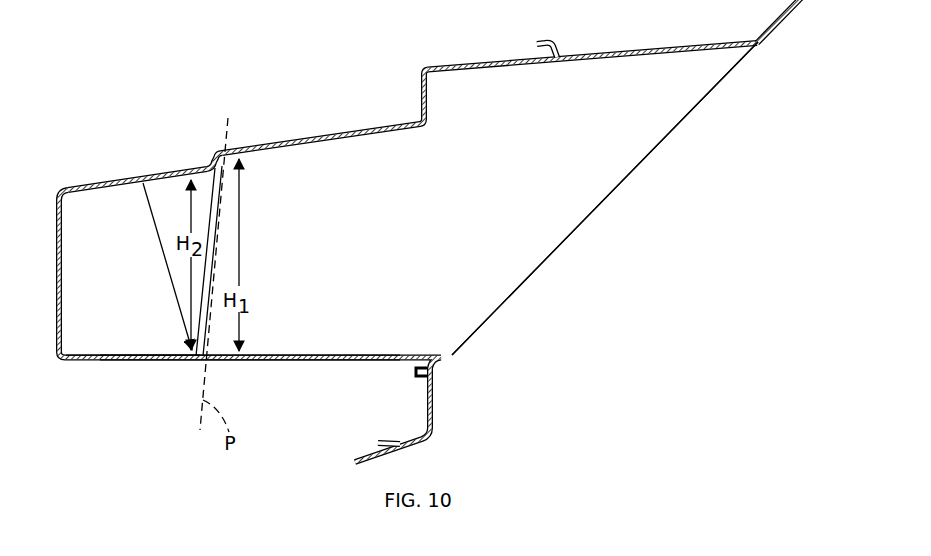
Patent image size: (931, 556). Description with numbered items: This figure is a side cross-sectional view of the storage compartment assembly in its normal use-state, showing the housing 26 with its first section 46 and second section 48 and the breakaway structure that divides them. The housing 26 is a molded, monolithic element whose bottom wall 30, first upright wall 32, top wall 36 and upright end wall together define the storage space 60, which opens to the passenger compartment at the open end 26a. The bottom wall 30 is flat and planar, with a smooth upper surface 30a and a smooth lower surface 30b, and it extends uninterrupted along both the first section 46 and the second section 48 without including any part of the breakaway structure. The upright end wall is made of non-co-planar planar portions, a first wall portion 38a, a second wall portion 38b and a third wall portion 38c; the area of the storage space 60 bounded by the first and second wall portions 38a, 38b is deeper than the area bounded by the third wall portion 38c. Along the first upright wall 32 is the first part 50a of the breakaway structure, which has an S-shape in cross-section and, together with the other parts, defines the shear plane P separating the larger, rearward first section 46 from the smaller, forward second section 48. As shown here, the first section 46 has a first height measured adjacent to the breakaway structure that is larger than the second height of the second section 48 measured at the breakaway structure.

The housing 26 is at (168, 90).
The open end 26a is at (618, 190).
The bottom wall 30 is at (376, 354).
The upper surface 30a is at (320, 354).
The lower surface 30b is at (283, 363).
The first upright wall 32 is at (491, 250).
The top wall 36 is at (342, 134).
The first wall portion 38a is at (57, 232).
The second wall portion 38b is at (110, 333).
The third wall portion 38c is at (160, 238).
The first section 46 is at (279, 142).
The second section 48 is at (107, 178).
The first part 50a is at (220, 216).
The storage space 60 is at (640, 107).